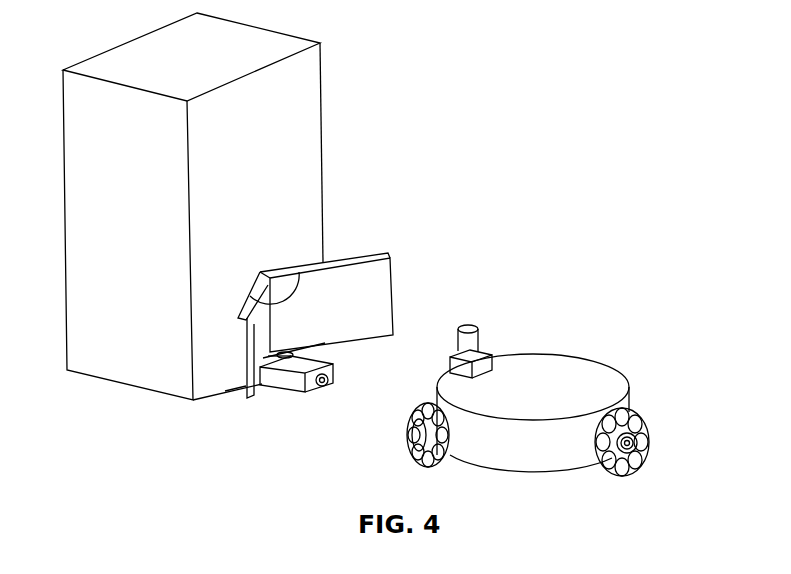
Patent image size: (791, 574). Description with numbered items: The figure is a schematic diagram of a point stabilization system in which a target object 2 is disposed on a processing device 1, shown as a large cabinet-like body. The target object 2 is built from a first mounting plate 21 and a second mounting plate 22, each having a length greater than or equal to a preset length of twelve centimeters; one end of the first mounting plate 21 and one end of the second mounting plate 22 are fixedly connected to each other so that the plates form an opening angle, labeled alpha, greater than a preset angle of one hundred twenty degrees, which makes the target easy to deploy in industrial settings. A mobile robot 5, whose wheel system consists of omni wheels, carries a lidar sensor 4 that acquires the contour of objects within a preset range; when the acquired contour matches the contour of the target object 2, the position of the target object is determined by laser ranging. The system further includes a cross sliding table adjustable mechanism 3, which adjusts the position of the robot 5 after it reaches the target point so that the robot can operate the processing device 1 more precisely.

The processing device 1 is at (305, 142).
The target object 2 is at (274, 316).
The first mounting plate 21 is at (260, 337).
The second mounting plate 22 is at (363, 312).
The cross sliding table adjustable mechanism 3 is at (285, 375).
The lidar sensor 4 is at (473, 347).
The mobile robot 5 is at (532, 373).